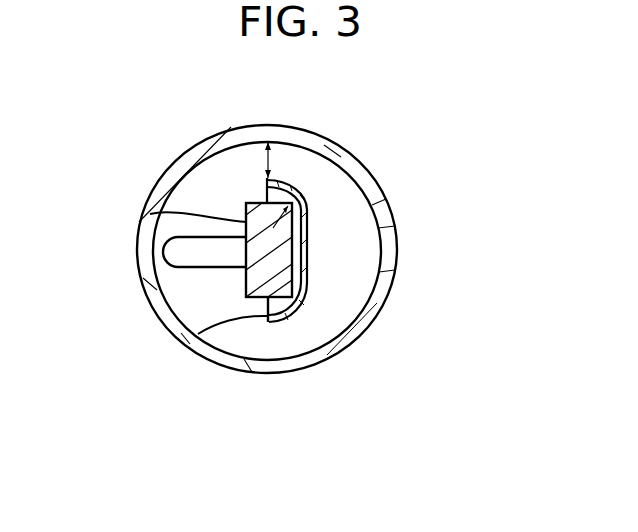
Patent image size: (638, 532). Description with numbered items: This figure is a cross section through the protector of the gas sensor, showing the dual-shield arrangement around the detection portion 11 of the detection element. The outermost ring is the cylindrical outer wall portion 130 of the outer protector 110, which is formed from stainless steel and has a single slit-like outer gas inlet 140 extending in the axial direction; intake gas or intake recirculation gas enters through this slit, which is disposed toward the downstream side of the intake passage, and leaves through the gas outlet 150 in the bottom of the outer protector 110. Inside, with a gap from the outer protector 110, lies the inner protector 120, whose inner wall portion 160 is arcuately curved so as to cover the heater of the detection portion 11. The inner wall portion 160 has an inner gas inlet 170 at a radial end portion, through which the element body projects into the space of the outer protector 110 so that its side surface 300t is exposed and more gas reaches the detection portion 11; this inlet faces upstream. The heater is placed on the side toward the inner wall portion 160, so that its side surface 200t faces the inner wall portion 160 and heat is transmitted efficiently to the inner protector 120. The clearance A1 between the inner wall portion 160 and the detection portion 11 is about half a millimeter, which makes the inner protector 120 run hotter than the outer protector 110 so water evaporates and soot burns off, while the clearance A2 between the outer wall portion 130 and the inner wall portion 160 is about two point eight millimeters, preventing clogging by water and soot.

The detection portion 11 is at (246, 210).
The outer protector 110 is at (367, 180).
The inner protector 120 is at (300, 186).
The outer wall portion 130 is at (358, 332).
The outer gas inlet 140 is at (392, 258).
The gas outlet 150 is at (176, 259).
The inner wall portion 160 is at (290, 313).
The inner gas inlet 170 is at (198, 336).
The side surface of the heater 200t is at (298, 272).
The side surface of the element body 300t is at (152, 218).
The clearance between the inner wall portion and the detection portion A1 is at (308, 214).
The clearance between the outer wall portion and the inner wall portion A2 is at (268, 183).